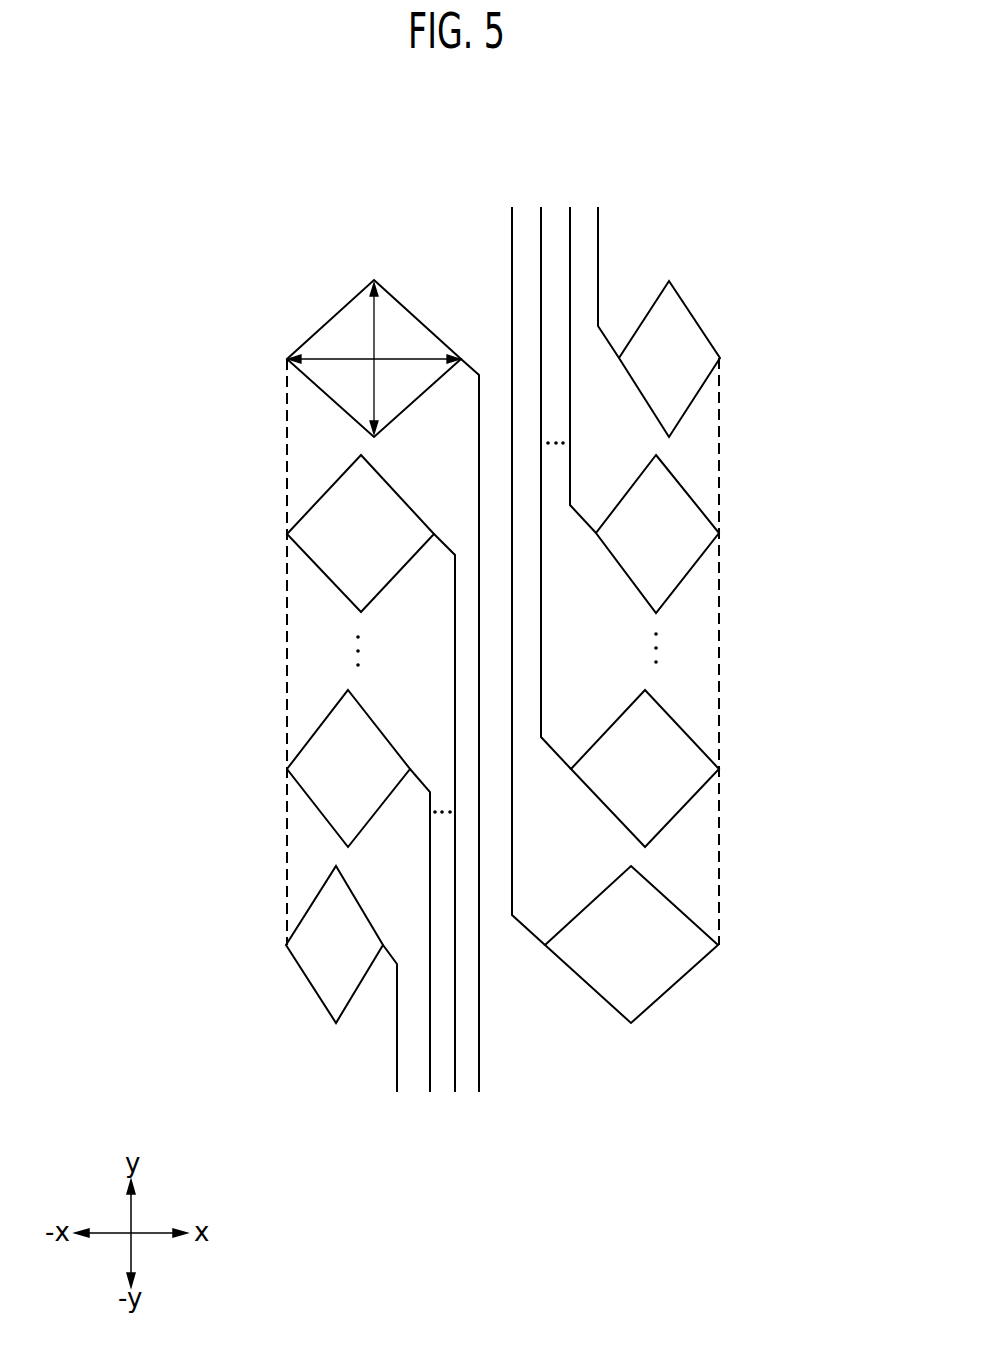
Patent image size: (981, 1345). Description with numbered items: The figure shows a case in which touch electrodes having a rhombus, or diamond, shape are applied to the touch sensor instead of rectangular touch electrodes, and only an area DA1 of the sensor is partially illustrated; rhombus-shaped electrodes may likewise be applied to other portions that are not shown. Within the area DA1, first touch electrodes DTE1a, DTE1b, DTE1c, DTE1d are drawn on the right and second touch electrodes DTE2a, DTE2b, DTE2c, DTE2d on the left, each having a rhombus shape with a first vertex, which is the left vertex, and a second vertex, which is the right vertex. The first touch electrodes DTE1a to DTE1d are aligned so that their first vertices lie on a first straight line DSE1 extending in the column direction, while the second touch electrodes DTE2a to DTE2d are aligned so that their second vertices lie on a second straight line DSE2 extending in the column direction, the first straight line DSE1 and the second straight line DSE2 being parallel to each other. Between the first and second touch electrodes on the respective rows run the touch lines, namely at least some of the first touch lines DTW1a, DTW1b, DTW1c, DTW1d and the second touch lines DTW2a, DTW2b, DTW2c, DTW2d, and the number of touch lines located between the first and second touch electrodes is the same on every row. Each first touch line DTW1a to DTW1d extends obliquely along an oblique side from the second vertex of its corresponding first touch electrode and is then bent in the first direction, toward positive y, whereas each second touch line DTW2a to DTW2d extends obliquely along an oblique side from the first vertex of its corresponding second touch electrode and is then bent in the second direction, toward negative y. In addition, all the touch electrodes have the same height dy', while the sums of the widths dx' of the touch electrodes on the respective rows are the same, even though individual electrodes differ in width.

The area DA1 is at (395, 134).
The first straight line DSE1 is at (720, 622).
The second straight line DSE2 is at (286, 594).
The first touch electrode DTE1a is at (702, 372).
The first touch electrode DTE1b is at (685, 544).
The first touch electrode DTE1c is at (677, 782).
The first touch electrode DTE1d is at (658, 961).
The second touch electrode DTE2a is at (365, 952).
The second touch electrode DTE2b is at (375, 776).
The second touch electrode DTE2c is at (392, 541).
The second touch electrode DTE2d is at (435, 392).
The first touch line DTW1a is at (598, 215).
The first touch line DTW1b is at (570, 217).
The first touch line DTW1c is at (541, 214).
The first touch line DTW1d is at (512, 233).
The second touch line DTW2a is at (397, 1075).
The second touch line DTW2b is at (429, 1078).
The second touch line DTW2c is at (454, 1078).
The second touch line DTW2d is at (479, 1075).
The width dx' is at (374, 374).
The height dy' is at (388, 358).